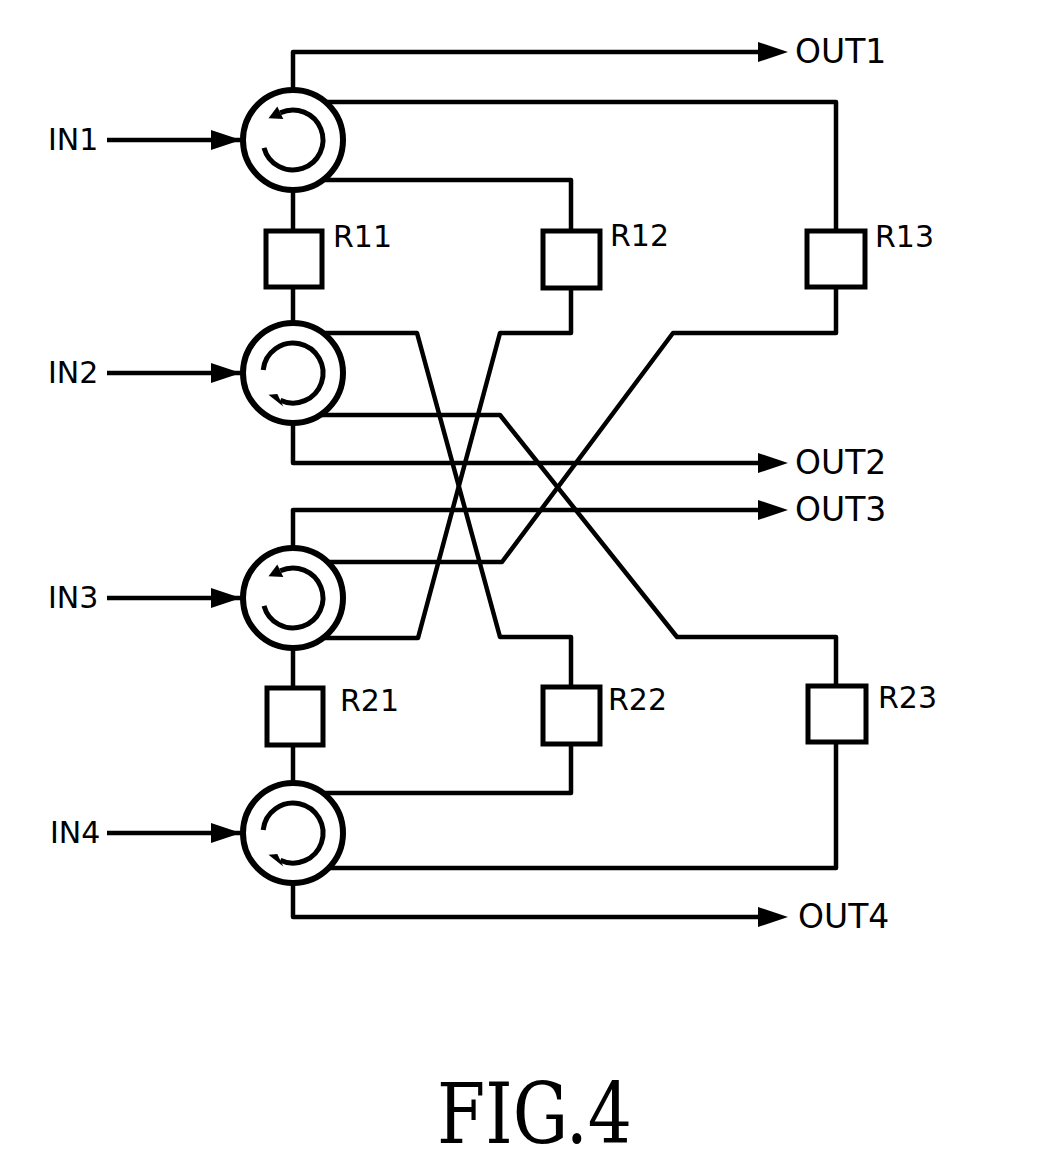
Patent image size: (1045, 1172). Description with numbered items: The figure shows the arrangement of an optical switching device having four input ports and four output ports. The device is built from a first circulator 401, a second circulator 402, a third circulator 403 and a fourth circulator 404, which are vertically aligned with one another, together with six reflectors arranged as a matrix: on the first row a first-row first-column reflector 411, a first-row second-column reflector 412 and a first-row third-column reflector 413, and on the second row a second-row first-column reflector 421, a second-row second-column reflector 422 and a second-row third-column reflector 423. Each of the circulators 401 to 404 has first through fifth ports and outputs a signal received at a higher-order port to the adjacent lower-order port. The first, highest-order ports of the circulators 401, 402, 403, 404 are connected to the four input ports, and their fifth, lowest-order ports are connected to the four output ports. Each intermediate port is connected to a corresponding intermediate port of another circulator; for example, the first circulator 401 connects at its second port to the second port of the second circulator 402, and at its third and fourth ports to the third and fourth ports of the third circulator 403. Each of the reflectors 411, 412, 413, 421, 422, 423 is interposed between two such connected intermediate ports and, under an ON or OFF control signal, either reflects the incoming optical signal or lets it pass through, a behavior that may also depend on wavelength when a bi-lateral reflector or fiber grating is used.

The first circulator 401 is at (250, 112).
The second circulator 402 is at (248, 352).
The third circulator 403 is at (247, 578).
The fourth circulator 404 is at (248, 810).
The R11 reflector 411 is at (265, 250).
The R12 reflector 412 is at (542, 278).
The R13 reflector 413 is at (806, 277).
The R21 reflector 421 is at (267, 700).
The R22 reflector 422 is at (543, 735).
The R23 reflector 423 is at (808, 735).